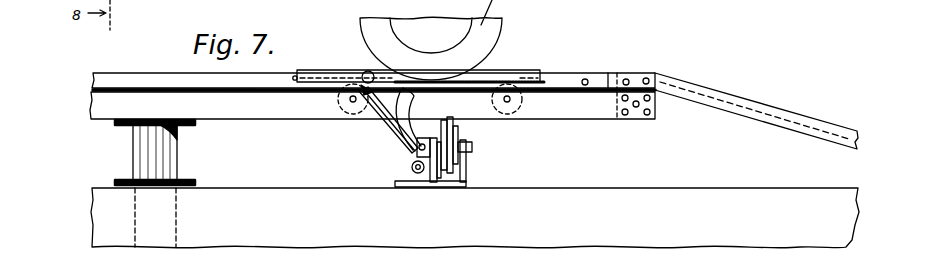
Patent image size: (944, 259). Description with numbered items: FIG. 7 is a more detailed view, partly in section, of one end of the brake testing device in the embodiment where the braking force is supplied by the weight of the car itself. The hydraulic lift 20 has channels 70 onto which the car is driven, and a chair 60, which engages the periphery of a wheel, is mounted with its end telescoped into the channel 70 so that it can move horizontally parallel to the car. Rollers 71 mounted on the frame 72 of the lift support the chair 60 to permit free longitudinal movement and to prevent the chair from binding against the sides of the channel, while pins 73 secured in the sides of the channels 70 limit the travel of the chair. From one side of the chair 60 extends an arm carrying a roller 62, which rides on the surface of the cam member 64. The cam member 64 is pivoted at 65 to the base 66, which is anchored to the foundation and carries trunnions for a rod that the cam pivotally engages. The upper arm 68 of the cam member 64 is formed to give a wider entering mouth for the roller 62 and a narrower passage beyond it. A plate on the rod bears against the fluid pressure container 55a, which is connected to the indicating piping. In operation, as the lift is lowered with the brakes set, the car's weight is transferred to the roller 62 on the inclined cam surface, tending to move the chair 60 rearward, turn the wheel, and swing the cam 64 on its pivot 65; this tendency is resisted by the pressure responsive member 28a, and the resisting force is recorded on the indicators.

The hydraulic lift 20 is at (136, 150).
The frame 72 is at (279, 115).
The channels 70 is at (133, 87).
The chairs 60 is at (531, 70).
The pins 73 is at (290, 77).
The roller 62 is at (363, 72).
The rollers 71 is at (525, 101).
The cam member 64 is at (378, 130).
The upper arm 68 is at (410, 108).
The base 66 is at (466, 172).
The fluid pressure container 55a is at (455, 125).
The pivot 65 is at (419, 174).
The pressure responsive member 28a is at (450, 182).